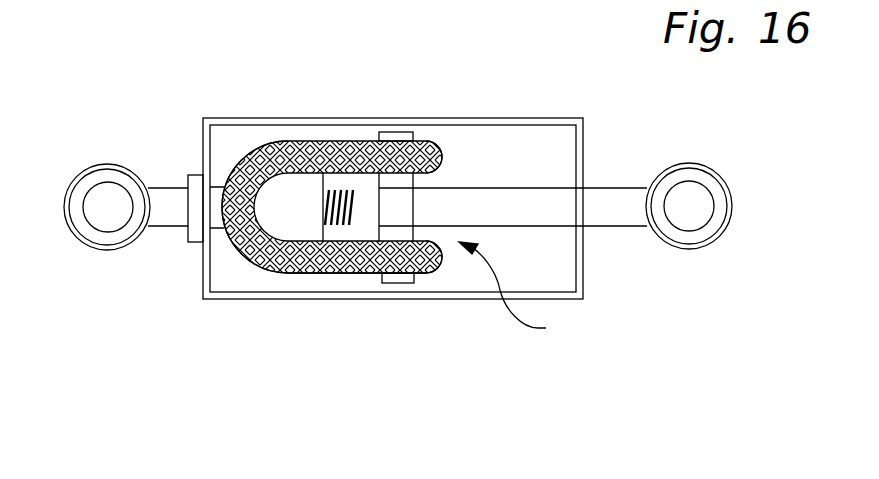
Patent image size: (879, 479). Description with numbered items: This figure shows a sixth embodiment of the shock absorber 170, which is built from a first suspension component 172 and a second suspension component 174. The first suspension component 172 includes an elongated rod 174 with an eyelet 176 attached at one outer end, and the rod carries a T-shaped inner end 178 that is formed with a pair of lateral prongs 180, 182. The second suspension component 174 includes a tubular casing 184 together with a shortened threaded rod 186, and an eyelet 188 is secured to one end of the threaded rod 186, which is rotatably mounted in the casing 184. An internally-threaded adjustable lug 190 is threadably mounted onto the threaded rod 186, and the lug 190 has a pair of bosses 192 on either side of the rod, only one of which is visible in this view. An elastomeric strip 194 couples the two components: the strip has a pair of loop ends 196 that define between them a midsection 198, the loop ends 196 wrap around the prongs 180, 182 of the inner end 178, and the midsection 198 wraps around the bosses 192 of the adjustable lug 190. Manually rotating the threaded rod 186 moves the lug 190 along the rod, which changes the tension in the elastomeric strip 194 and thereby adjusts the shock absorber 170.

The shock absorber 170 is at (394, 90).
The first suspension component 172 is at (613, 187).
The elongated rod 174 is at (268, 125).
The eyelet 176 is at (690, 247).
The T-shaped inner end 178 is at (518, 291).
The lateral prong 180 is at (403, 182).
The lateral prong 182 is at (408, 287).
The tubular casing 184 is at (340, 119).
The shortened threaded rod 186 is at (170, 197).
The eyelet 188 is at (85, 247).
The adjustable lug 190 is at (288, 229).
The boss 192 is at (235, 248).
The elastomeric strip 194 is at (342, 277).
The loop end 196 is at (435, 147).
The midsection 198 is at (248, 165).